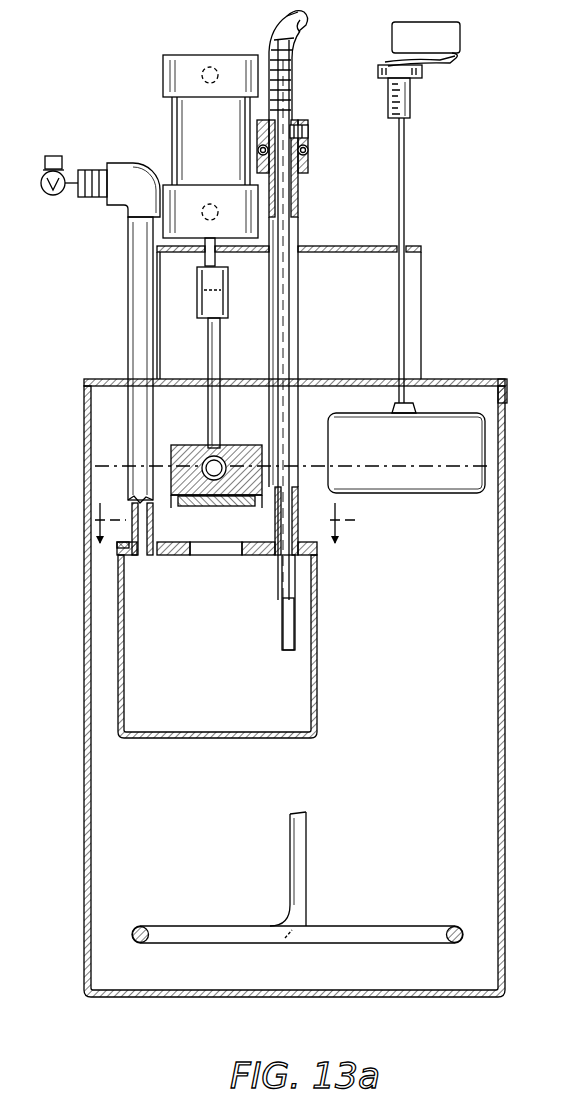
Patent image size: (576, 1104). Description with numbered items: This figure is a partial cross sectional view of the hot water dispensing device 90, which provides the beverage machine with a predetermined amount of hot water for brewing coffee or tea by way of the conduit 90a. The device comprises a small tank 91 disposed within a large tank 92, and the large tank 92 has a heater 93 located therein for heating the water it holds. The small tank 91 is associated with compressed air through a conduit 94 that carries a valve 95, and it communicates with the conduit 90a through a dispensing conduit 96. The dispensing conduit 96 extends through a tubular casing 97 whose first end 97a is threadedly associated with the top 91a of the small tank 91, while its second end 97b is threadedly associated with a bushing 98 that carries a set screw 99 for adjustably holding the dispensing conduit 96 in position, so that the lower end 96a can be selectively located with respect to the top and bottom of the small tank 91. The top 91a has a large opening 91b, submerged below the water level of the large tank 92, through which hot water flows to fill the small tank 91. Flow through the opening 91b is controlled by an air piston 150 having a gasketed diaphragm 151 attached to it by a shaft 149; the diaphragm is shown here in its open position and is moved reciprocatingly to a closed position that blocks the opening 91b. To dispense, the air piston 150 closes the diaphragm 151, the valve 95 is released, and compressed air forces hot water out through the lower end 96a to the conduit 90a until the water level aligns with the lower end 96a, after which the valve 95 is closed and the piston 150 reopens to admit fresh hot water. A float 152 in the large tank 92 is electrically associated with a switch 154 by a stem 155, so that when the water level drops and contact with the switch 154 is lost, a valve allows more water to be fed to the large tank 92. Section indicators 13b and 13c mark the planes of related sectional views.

The hot water dispensing device 90 is at (414, 228).
The conduit 90a is at (300, 27).
The small tank 91 is at (319, 649).
The top of the small tank 91a is at (120, 548).
The large opening 91b is at (220, 522).
The large tank 92 is at (508, 791).
The heater 93 is at (307, 850).
The conduit 94 is at (134, 307).
The valve 95 is at (57, 156).
The dispensing conduit 96 is at (291, 78).
The lower end of the dispensing conduit 96a is at (284, 649).
The tubular casing 97 is at (298, 228).
The first end of the tubular casing 97a is at (278, 555).
The second end of the tubular casing 97b is at (299, 160).
The bushing 98 is at (294, 149).
The set screw 99 is at (309, 132).
The shaft 149 is at (222, 360).
The air piston 150 is at (212, 139).
The gasketed diaphragm 151 is at (242, 445).
The float 152 is at (414, 453).
The switch 154 is at (440, 46).
The stem 155 is at (405, 152).
The section line 13b is at (193, 282).
The section line 13c is at (209, 530).